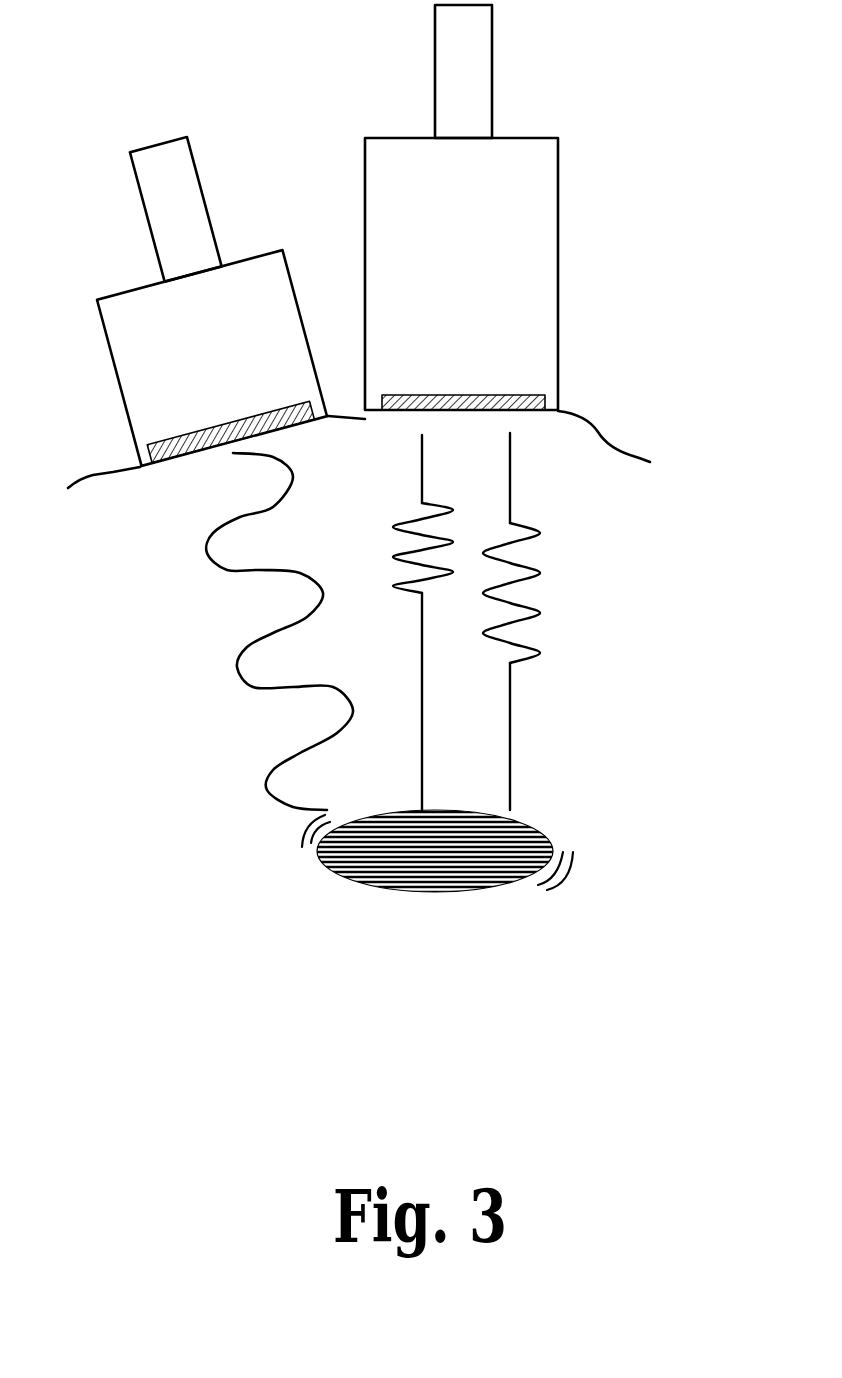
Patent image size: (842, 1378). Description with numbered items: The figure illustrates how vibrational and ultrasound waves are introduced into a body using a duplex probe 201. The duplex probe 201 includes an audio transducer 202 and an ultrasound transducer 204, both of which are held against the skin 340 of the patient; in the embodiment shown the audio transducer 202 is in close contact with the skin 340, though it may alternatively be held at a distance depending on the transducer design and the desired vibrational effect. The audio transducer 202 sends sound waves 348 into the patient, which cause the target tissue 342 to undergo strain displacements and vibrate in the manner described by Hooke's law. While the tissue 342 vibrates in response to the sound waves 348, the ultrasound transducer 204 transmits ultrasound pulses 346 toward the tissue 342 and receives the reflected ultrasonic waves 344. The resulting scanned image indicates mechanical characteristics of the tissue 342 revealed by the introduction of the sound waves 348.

The duplex probe 201 is at (313, 62).
The audio transducer 202 is at (188, 293).
The ultrasound transducer 204 is at (493, 207).
The skin 340 is at (402, 457).
The target tissue 342 is at (463, 882).
The reflected ultrasonic waves 344 is at (556, 565).
The ultrasound pulses 346 is at (380, 550).
The sound waves 348 is at (216, 659).